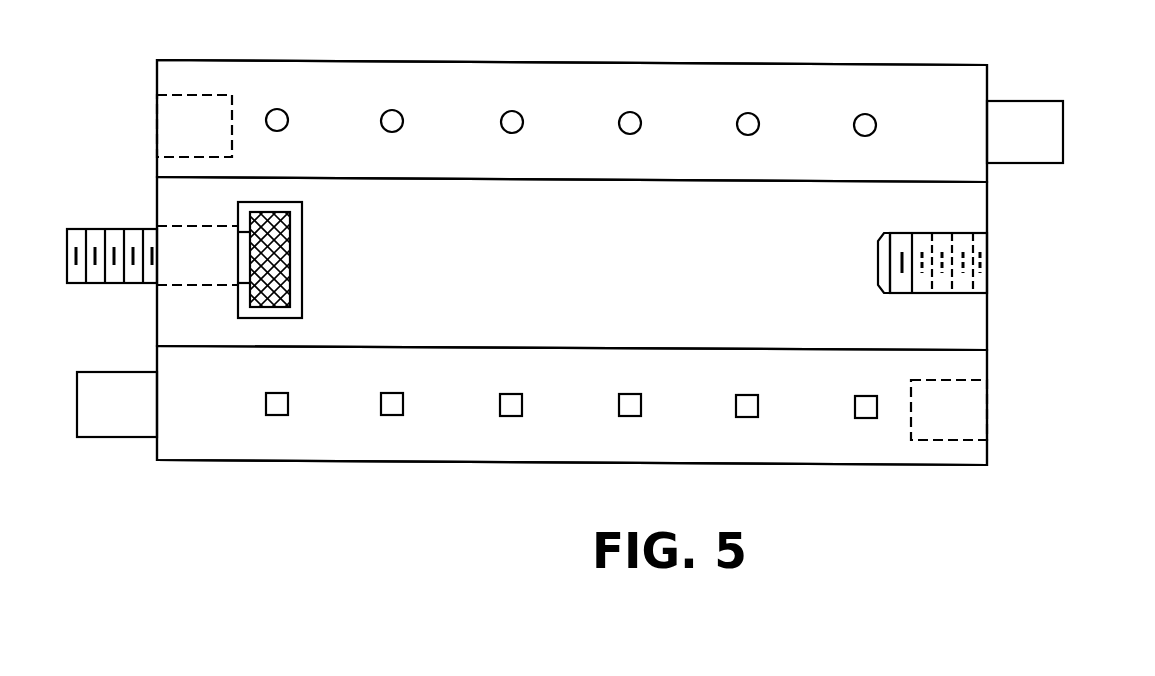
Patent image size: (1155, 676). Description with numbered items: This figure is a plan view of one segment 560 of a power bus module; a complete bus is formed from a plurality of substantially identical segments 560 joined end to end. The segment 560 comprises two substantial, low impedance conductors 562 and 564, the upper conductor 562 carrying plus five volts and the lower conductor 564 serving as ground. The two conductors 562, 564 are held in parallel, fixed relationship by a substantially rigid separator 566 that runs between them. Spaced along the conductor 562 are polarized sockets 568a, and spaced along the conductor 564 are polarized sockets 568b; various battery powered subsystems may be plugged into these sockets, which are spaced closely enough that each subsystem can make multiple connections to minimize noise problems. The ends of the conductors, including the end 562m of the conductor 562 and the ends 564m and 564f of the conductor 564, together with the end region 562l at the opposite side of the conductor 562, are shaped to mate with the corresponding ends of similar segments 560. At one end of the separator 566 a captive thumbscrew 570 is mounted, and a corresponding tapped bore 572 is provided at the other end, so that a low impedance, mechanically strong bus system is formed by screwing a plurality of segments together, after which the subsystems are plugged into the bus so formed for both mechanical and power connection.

The segment 560 is at (428, 38).
The conductor 562 is at (584, 142).
The left connector region of section 562 562l is at (157, 128).
The end of conductor 562 562m is at (1025, 101).
The conductor 564 is at (588, 440).
The end of conductor 564 564m is at (115, 437).
The end of conductor 564 564f is at (987, 412).
The separator 566 is at (574, 269).
The polarized socket 568a is at (630, 112).
The polarized socket 568b is at (388, 416).
The captive thumbscrew 570 is at (140, 229).
The tapped bore 572 is at (987, 268).